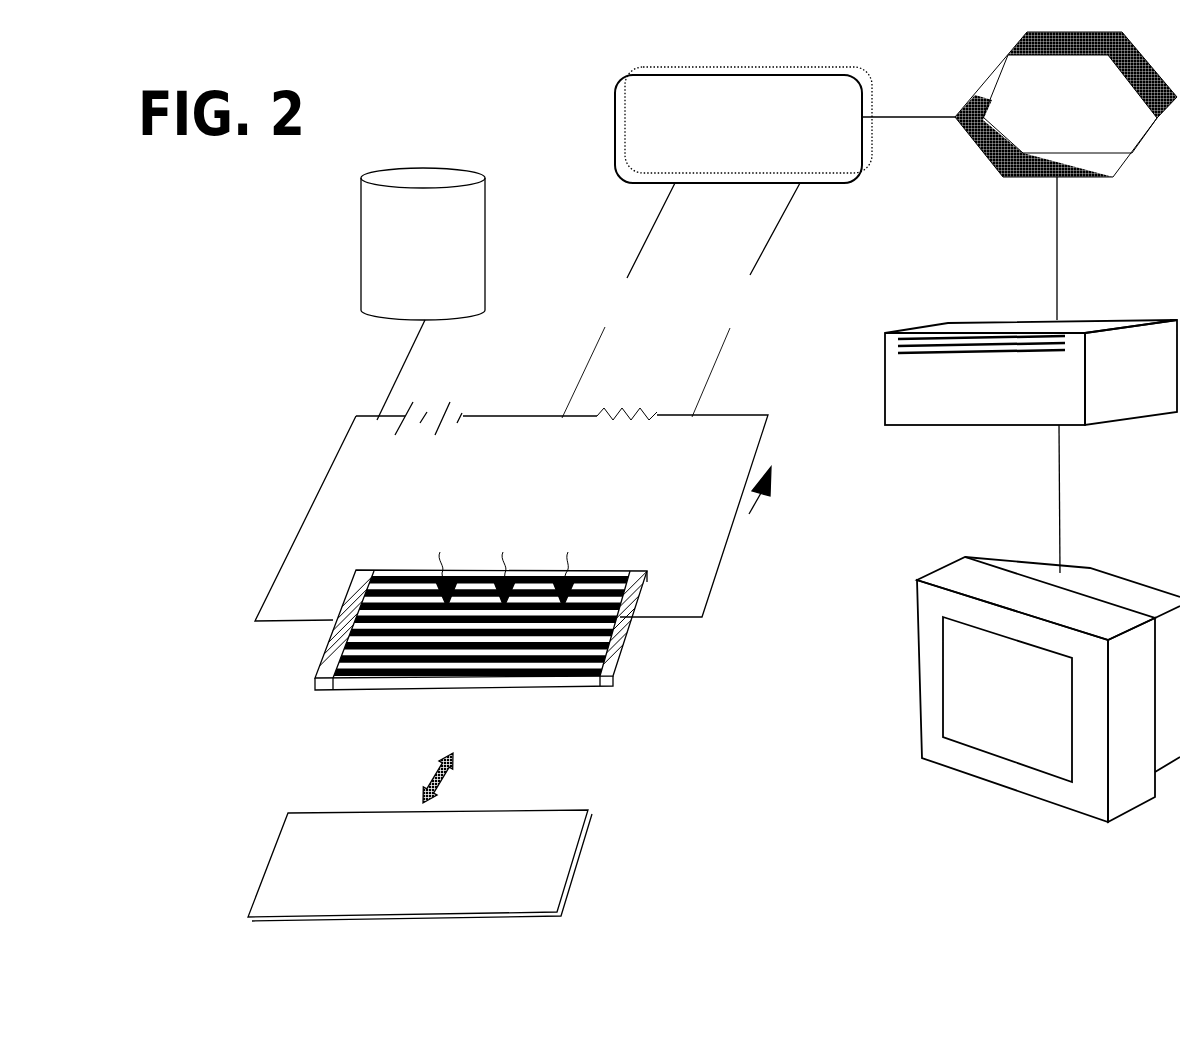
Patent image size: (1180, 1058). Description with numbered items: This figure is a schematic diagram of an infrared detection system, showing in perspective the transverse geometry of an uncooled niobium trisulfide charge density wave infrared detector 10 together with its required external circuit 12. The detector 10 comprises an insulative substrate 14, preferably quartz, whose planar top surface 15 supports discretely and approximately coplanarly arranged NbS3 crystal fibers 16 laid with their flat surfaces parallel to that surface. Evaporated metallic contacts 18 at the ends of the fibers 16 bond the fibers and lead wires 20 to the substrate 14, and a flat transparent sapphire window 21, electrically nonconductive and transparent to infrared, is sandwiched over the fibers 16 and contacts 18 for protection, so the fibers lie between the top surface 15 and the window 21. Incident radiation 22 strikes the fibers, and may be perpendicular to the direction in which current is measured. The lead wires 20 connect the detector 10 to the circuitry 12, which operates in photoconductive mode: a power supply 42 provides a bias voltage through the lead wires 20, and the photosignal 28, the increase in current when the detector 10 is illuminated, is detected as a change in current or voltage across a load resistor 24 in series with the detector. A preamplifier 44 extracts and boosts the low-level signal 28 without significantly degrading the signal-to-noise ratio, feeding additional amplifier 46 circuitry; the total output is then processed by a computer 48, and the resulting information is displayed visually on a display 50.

The charge density wave infrared detector 10 is at (490, 665).
The external circuit 12 is at (496, 408).
The insulative substrate 14 is at (632, 633).
The top surface 15 is at (583, 627).
The NbS3 crystal fibers 16 is at (443, 653).
The metallic contacts 18 is at (333, 650).
The lead wires 20 is at (457, 462).
The sapphire window 21 is at (420, 837).
The incident radiation 22 is at (518, 566).
The load resistor 24 is at (660, 460).
The photosignal 28 is at (717, 353).
The power supply 42 is at (423, 294).
The preamplifier 44 is at (785, 125).
The amplifier 46 is at (1066, 176).
The computer 48 is at (1031, 446).
The display 50 is at (1048, 689).